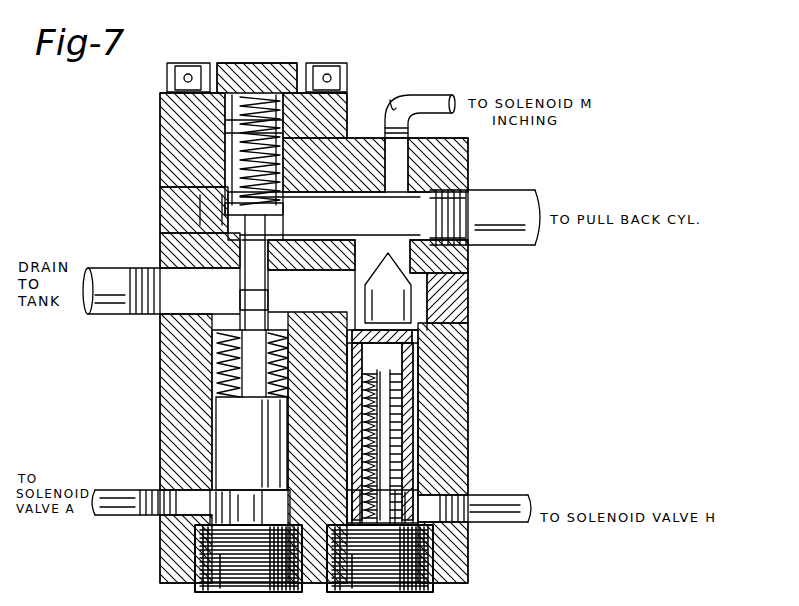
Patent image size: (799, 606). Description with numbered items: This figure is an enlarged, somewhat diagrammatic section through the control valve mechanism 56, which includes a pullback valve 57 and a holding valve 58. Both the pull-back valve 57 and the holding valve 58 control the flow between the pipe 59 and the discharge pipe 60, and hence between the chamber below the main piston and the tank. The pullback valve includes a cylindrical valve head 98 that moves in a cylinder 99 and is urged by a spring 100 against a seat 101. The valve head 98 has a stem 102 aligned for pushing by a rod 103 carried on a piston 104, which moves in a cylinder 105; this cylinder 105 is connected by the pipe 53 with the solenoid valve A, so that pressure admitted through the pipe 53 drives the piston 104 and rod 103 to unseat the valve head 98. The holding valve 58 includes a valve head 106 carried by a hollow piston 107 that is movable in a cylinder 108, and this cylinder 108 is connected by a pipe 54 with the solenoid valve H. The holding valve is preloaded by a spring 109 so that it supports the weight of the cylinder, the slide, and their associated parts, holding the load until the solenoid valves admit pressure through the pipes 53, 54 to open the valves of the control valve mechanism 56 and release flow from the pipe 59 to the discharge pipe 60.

The control valve mechanism 56 is at (239, 56).
The spring 100 is at (284, 80).
The cylinder 99 is at (290, 118).
The pipe 59 is at (527, 208).
The pullback valve 57 is at (200, 222).
The discharge pipe 60 is at (135, 282).
The cylindrical valve head 98 is at (288, 197).
The seat 101 is at (283, 212).
The stem 102 is at (258, 280).
The valve head 106 is at (372, 297).
The holding valve 58 is at (467, 287).
The cylinder 108 is at (423, 373).
The hollow piston 107 is at (413, 398).
The spring 109 is at (402, 440).
The cylinder 105 is at (217, 410).
The piston 104 is at (242, 432).
The rod 103 is at (258, 400).
The pipe 54 is at (493, 503).
The pipe 53 is at (132, 508).